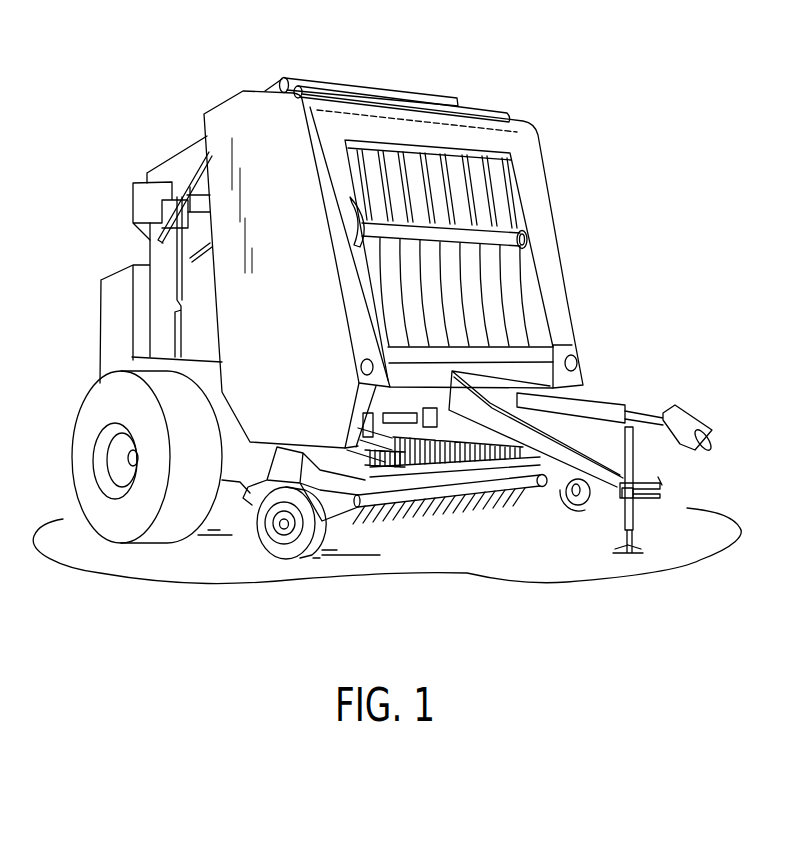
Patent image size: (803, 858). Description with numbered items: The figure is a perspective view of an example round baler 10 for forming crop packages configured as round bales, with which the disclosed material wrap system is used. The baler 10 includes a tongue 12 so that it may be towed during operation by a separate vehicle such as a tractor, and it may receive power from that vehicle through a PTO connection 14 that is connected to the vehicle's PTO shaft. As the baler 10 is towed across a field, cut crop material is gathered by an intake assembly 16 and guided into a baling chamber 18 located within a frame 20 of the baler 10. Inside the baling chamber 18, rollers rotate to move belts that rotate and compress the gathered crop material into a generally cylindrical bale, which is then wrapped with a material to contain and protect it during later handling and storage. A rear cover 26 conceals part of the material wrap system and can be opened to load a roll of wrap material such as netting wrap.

The round baler 10 is at (635, 54).
The tongue 12 is at (617, 488).
The PTO connection 14 is at (610, 403).
The intake assembly 16 is at (476, 534).
The baling chamber 18 is at (271, 205).
The frame 20 is at (254, 90).
The rear cover 26 is at (118, 267).